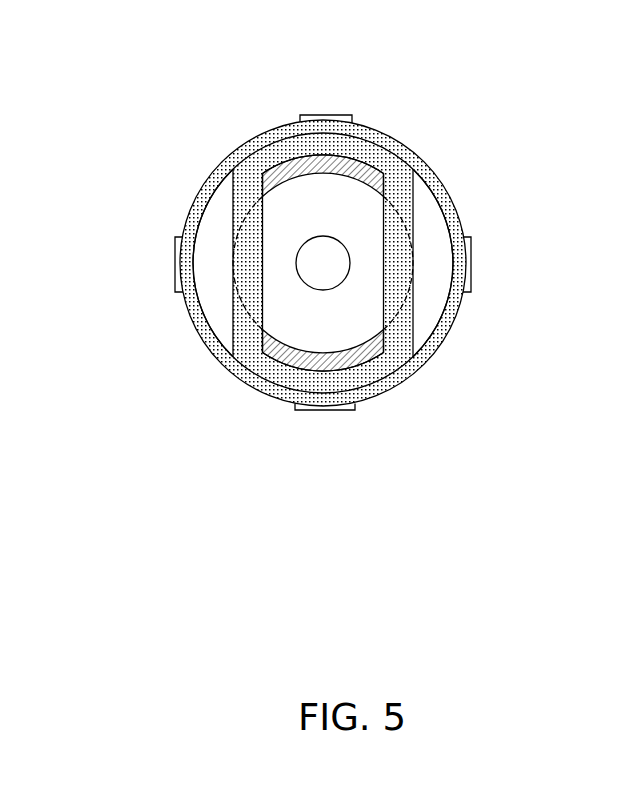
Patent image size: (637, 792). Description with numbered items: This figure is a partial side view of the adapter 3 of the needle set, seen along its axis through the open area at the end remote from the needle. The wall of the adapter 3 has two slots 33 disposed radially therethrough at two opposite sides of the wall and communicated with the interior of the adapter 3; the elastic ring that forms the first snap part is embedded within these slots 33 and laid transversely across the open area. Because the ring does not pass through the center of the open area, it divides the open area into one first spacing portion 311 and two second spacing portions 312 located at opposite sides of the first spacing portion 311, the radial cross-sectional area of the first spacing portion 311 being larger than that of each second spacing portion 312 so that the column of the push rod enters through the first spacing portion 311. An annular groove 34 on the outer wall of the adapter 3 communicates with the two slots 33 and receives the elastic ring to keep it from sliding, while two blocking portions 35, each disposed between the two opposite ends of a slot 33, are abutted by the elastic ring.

The adapter 3 is at (323, 210).
The annular groove 34 is at (207, 178).
The blocking portion 35 is at (323, 160).
The first spacing portion 311 is at (365, 205).
The second spacing portion 312 is at (212, 235).
The slot 33 is at (215, 266).